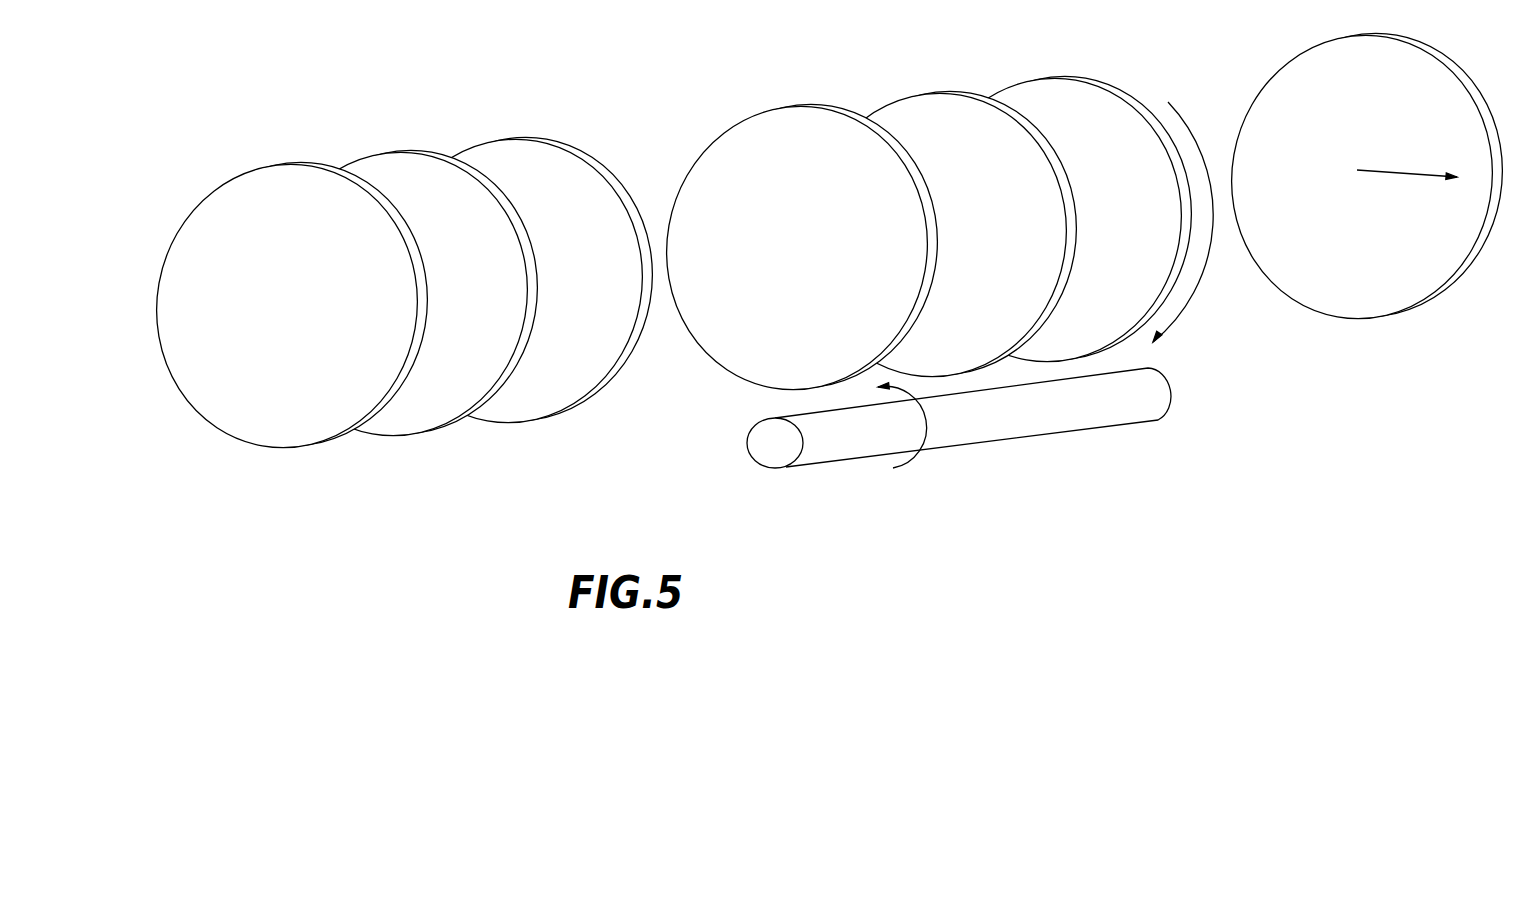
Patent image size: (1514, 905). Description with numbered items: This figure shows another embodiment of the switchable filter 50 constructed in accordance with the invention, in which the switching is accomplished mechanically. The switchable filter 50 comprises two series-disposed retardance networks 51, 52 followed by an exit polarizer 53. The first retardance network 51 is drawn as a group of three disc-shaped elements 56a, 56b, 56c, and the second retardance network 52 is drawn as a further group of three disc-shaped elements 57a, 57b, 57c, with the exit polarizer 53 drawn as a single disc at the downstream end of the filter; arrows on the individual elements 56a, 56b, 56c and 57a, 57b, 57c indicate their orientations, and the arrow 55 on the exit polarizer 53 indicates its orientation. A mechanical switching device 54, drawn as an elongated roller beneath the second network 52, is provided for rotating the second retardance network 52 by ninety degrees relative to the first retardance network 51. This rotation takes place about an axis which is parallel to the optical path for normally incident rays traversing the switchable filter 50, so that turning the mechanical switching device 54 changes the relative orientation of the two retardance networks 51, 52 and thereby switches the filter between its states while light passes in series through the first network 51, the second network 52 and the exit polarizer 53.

The switchable filter 50 is at (824, 299).
The retardance network 51 is at (550, 94).
The retardance network 52 is at (1092, 36).
The exit polarizer 53 is at (1277, 70).
The mechanical switching device 54 is at (745, 448).
The rotation direction arrow 55 is at (1410, 174).
The disc of first group 56a is at (337, 265).
The disc of first group 56b is at (512, 322).
The disc of first group 56c is at (608, 257).
The disc of second group 57a is at (851, 248).
The disc of second group 57b is at (956, 240).
The disc of second group 57c is at (1087, 165).